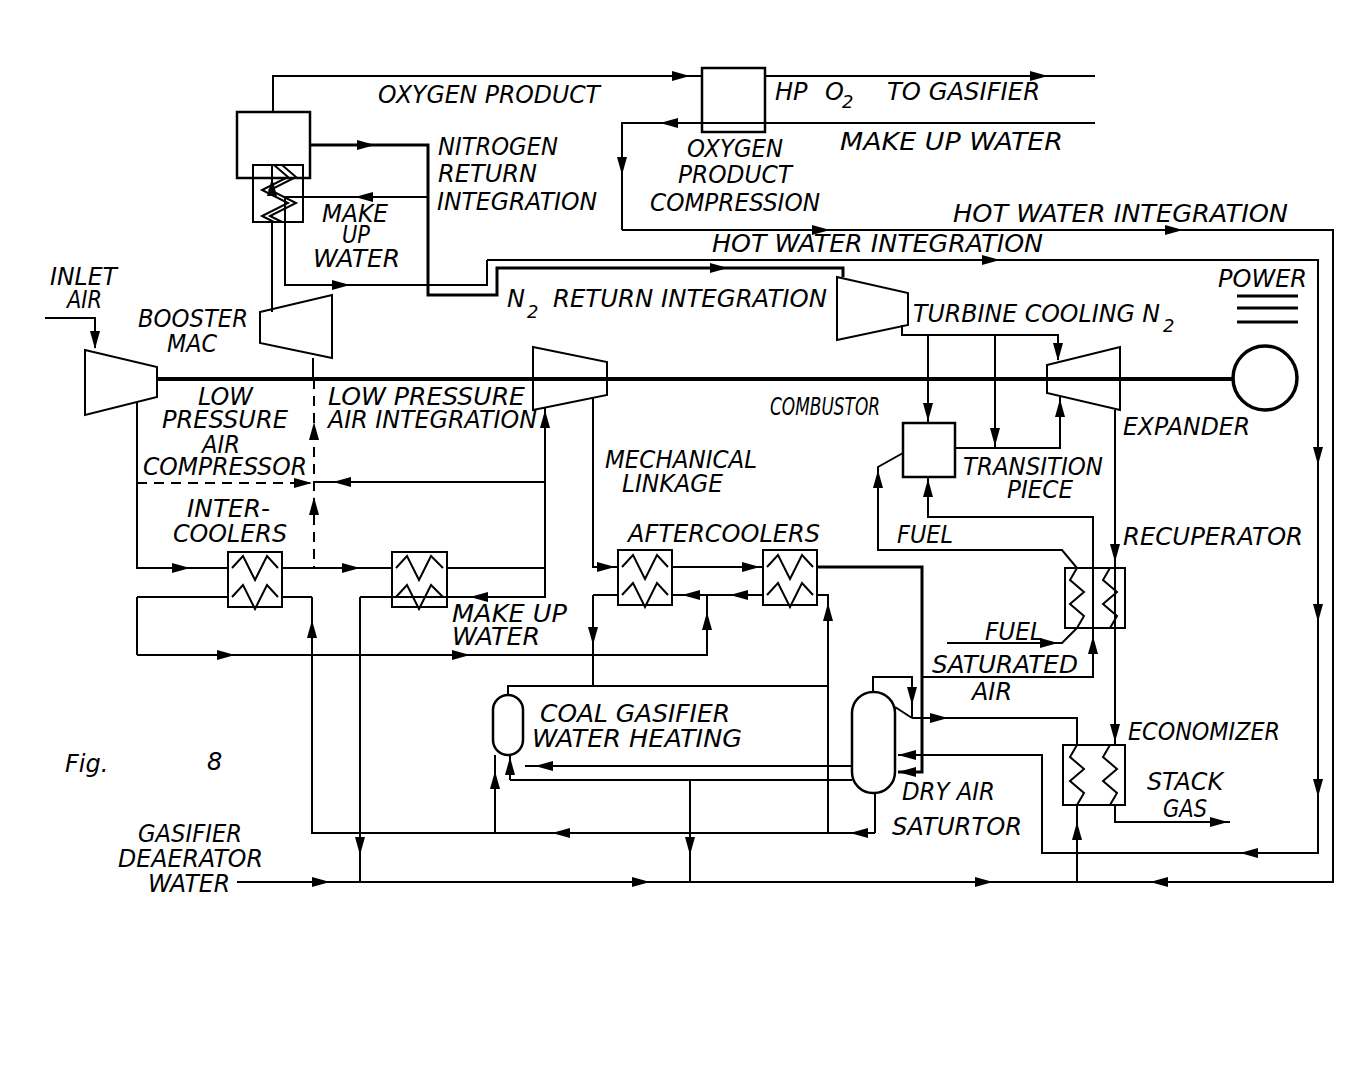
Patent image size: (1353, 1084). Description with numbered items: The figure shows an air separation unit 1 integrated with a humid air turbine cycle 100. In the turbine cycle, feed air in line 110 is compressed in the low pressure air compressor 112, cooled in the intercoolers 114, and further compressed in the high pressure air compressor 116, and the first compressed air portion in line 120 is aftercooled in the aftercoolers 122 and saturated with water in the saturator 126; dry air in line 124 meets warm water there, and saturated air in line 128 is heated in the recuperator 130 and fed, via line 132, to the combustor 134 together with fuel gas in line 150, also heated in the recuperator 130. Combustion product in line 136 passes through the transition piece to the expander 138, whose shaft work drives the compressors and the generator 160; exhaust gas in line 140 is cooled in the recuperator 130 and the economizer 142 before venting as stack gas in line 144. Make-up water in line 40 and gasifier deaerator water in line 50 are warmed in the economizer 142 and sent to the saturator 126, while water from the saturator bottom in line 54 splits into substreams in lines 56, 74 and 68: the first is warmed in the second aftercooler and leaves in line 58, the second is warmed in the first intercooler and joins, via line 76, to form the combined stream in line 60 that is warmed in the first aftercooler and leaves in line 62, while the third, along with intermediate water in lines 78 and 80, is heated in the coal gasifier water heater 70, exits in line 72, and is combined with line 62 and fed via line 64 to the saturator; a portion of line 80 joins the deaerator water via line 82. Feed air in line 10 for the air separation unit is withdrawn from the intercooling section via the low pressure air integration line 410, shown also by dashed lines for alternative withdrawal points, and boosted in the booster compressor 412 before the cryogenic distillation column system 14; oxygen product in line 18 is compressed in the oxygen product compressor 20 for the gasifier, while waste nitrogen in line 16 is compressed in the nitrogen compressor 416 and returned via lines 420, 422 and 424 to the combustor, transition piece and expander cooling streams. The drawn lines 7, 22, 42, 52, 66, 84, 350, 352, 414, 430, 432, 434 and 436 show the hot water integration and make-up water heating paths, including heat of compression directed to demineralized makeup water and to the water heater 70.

The air separation unit 1 is at (185, 176).
The low pressure air line 7 is at (138, 510).
The feed air line 10 is at (268, 207).
The cryogenic distillation column system 14 is at (237, 152).
The nitrogen waste line 16 is at (332, 143).
The oxygen product line 18 is at (273, 93).
The oxygen product compressor 20 is at (747, 117).
The high pressure oxygen line to gasifier 22 is at (1070, 77).
The make-up water line 40 is at (505, 595).
The water line 42 is at (362, 743).
The gasifier deaerator water line 50 is at (320, 883).
The water return line 52 is at (985, 723).
The saturator bottom water line 54 is at (872, 835).
The first substream line 56 is at (827, 798).
The warmed water line from second aftercooler 58 is at (750, 597).
The combined warmed water line 60 is at (698, 597).
The heated water line 62 is at (593, 670).
The saturator feed water line 64 is at (760, 686).
The water line 66 is at (800, 833).
The third substream line 68 is at (493, 812).
The coal gasifier water heater 70 is at (522, 737).
The heated water line from heater 72 is at (563, 686).
The second substream line 74 is at (400, 830).
The warmed intercooler water line 76 is at (682, 655).
The intermediate water stream line 78 is at (767, 763).
The lower intermediate water stream line 80 is at (755, 800).
The water combination line 82 is at (688, 798).
The water line 84 is at (533, 780).
The integrated humid air turbine cycle 100 is at (255, 679).
The feed air line 110 is at (68, 322).
The low pressure air compressor 112 is at (127, 392).
The intercoolers 114 is at (257, 607).
The high pressure air compressor 116 is at (577, 391).
The first compressed air portion line 120 is at (590, 433).
The aftercoolers 122 is at (763, 585).
The dry air line 124 is at (923, 622).
The saturator 126 is at (890, 748).
The saturated air line 128 is at (1027, 678).
The recuperator 130 is at (1127, 617).
The heated saturated air line 132 is at (977, 517).
The combustor 134 is at (947, 457).
The combustion product line 136 is at (1055, 428).
The expander 138 is at (1105, 387).
The exhaust gas line 140 is at (1117, 513).
The economizer 142 is at (1125, 777).
The stack gas line 144 is at (1193, 827).
The fuel gas line 150 is at (960, 643).
The generator 160 is at (1287, 387).
The gasifier deaerator water line 350 is at (1037, 882).
The economizer water line 352 is at (1077, 815).
The low pressure air integration line 410 is at (413, 482).
The booster compressor 412 is at (320, 341).
The heat exchanger 414 is at (253, 237).
The nitrogen compressor 416 is at (880, 322).
The combustor nitrogen return line 420 is at (927, 350).
The transition piece nitrogen return line 422 is at (993, 365).
The expander nitrogen return line 424 is at (1060, 342).
The make up water line 430 is at (317, 197).
The hot water integration line 432 is at (633, 260).
The make up water line 434 is at (1095, 123).
The hot water integration line 436 is at (878, 230).